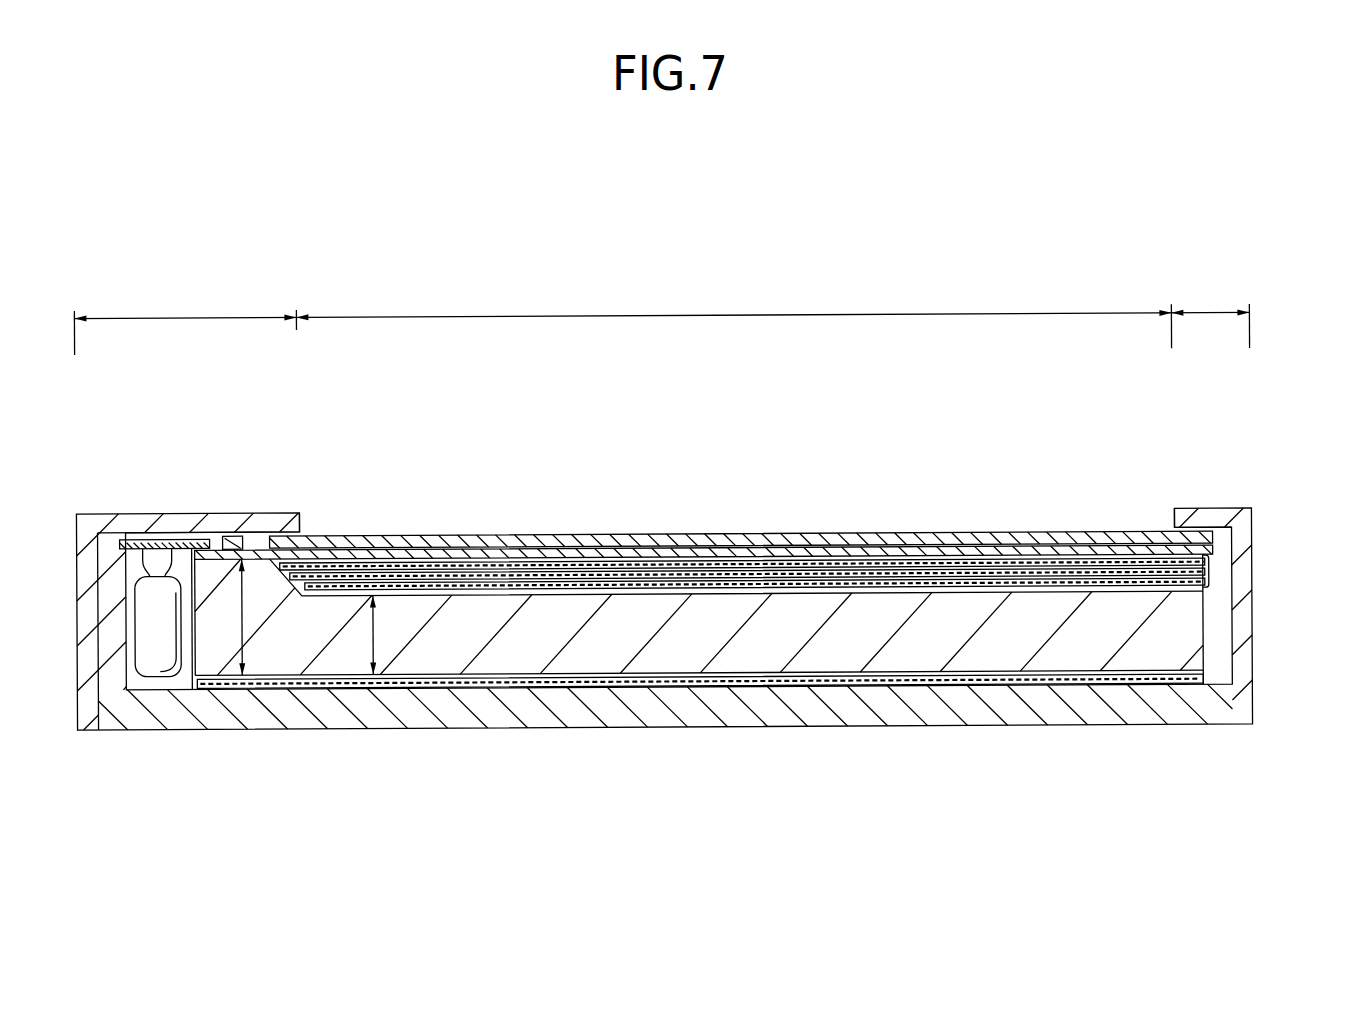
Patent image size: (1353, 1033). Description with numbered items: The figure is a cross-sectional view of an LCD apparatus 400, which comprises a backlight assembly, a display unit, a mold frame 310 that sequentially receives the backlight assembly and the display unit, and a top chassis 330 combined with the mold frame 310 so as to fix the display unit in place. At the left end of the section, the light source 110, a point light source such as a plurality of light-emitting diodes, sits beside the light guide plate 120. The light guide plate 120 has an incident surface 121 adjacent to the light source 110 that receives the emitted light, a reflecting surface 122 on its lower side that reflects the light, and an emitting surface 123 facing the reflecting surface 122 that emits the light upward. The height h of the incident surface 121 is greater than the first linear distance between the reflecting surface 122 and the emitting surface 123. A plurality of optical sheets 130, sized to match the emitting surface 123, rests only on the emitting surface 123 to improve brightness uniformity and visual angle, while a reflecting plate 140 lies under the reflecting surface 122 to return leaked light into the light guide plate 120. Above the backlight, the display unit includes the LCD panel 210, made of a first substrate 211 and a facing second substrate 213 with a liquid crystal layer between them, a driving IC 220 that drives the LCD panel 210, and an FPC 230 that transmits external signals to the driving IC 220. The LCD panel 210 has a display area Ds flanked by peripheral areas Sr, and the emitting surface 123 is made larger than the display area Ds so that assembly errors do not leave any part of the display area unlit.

The LCD apparatus 400 is at (690, 239).
The mold frame 310 is at (1006, 724).
The top chassis 330 is at (187, 503).
The FPC 230 is at (150, 545).
The driving IC 220 is at (233, 534).
The light source 110 is at (150, 663).
The incident surface 121 is at (186, 677).
The light guide plate 120 is at (1177, 633).
The reflecting surface 122 is at (665, 653).
The emitting surface 123 is at (523, 600).
The optical sheets 130 is at (1209, 573).
The reflecting plate 140 is at (845, 684).
The LCD panel 210 is at (703, 462).
The first substrate 211 is at (776, 534).
The second substrate 213 is at (807, 420).